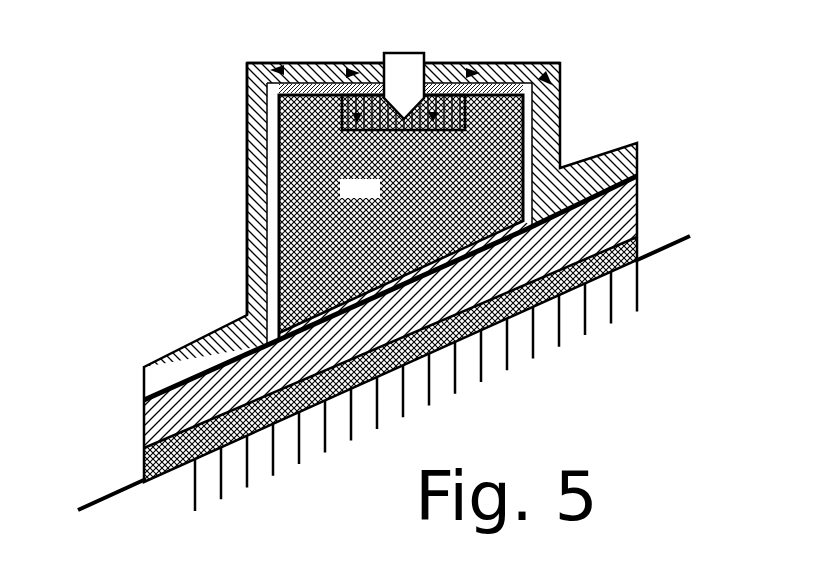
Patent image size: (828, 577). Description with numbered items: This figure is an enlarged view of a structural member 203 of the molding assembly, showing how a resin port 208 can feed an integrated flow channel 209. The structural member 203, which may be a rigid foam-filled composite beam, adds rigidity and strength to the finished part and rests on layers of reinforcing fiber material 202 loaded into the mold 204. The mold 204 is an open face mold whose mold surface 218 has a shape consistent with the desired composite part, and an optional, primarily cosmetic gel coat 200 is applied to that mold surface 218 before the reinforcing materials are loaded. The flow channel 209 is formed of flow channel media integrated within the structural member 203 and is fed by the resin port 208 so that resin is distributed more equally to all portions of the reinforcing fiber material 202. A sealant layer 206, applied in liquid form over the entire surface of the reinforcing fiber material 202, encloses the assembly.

The gel coat 200 is at (380, 287).
The reinforcing fiber material 202 is at (201, 333).
The structural member 203 is at (401, 218).
The mold 204 is at (663, 253).
The sealant layer 206 is at (247, 118).
The resin port 208 is at (427, 52).
The flow channel 209 is at (328, 70).
The mold surface 218 is at (107, 497).